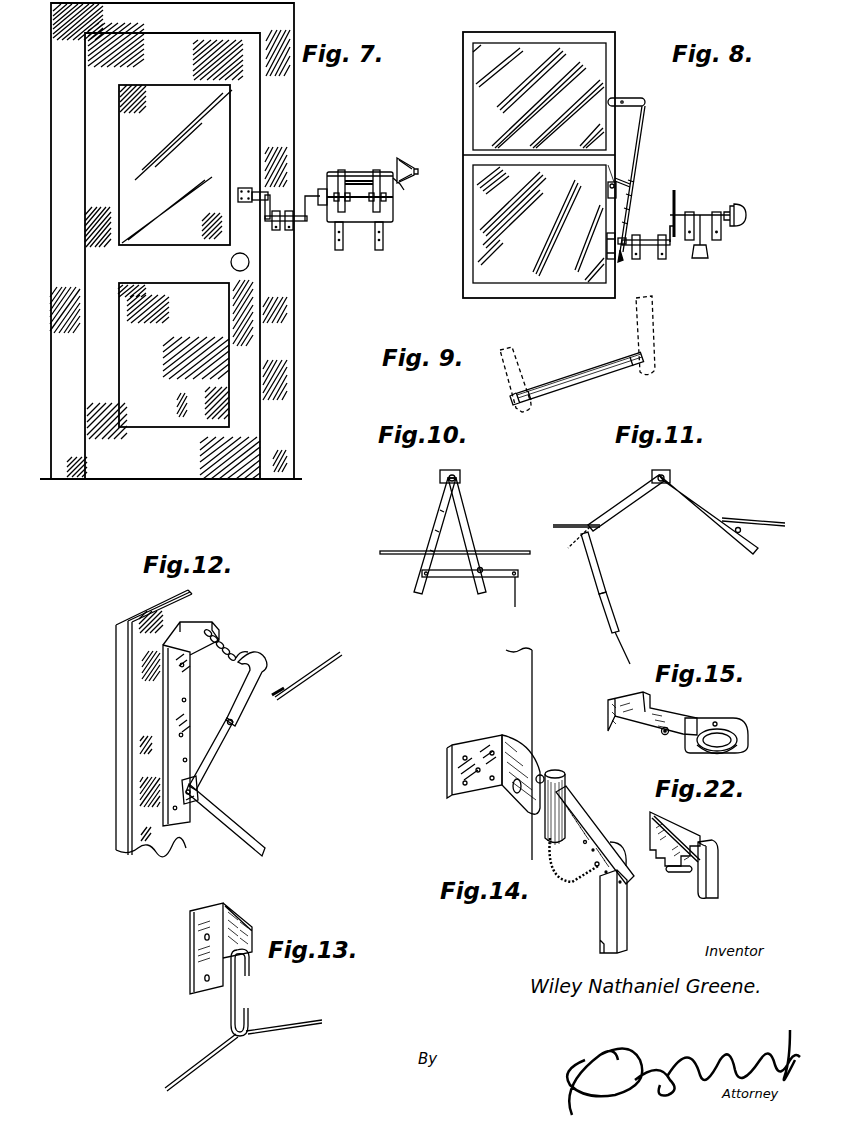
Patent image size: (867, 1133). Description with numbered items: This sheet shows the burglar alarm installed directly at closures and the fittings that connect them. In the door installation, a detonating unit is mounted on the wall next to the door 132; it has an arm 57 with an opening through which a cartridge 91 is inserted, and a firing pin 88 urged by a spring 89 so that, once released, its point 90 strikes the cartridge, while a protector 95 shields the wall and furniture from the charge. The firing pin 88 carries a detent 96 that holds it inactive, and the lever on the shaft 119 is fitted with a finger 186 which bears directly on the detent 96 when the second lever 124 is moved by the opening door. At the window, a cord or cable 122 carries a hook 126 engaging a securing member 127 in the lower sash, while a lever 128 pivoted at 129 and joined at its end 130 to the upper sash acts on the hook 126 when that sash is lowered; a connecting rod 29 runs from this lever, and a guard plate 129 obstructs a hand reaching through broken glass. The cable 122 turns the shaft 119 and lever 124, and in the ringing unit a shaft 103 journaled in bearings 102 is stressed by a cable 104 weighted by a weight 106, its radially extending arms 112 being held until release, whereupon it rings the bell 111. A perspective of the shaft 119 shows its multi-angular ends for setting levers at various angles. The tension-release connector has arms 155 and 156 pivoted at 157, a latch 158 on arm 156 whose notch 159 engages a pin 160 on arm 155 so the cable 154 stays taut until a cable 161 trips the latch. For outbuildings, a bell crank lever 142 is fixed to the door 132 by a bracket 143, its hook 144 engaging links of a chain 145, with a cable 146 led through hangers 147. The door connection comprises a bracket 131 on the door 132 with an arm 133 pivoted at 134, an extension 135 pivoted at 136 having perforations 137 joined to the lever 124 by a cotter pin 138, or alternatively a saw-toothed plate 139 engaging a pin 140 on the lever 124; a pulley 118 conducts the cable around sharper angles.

In FIG. 7, the door 132 is at (250, 338).
In FIG. 12, the door 132 is at (128, 728).
In FIG. 14, the door 132 is at (518, 698).
In FIG. 7, the extension 135 is at (254, 188).
In FIG. 14, the extension 135 is at (586, 824).
In FIG. 7, the second lever 124 is at (271, 200).
In FIG. 8, the second lever 124 is at (626, 238).
In FIG. 14, the second lever 124 is at (610, 928).
In FIG. 22, the second lever 124 is at (708, 890).
In FIG. 7, the shaft 119 is at (283, 230).
In FIG. 8, the shaft 119 is at (644, 240).
In FIG. 9, the shaft 119 is at (585, 366).
In FIG. 7, the finger 186 is at (307, 196).
In FIG. 7, the detent 96 is at (321, 205).
In FIG. 7, the arm 57 is at (330, 222).
In FIG. 7, the spring 89 is at (342, 170).
In FIG. 7, the firing pin 88 is at (376, 170).
In FIG. 7, the point 90 is at (393, 197).
In FIG. 7, the cartridge 91 is at (408, 186).
In FIG. 7, the protector 95 is at (404, 162).
In FIG. 8, the end 130 is at (610, 100).
In FIG. 8, the lever 128 is at (640, 98).
In FIG. 8, the rod 29 is at (638, 110).
In FIG. 8, the hook 126 is at (627, 183).
In FIG. 8, the cord or cable 122 is at (628, 192).
In FIG. 8, the securing member 127 is at (608, 186).
In FIG. 8, the pivot / guard plate 129 is at (607, 245).
In FIG. 8, the radially extending arms 112 is at (670, 208).
In FIG. 8, the shaft 103 is at (693, 212).
In FIG. 8, the bearings 102 is at (688, 212).
In FIG. 8, the bell 111 is at (746, 213).
In FIG. 8, the cord or cable 104 is at (702, 236).
In FIG. 8, the weight 106 is at (700, 258).
In FIG. 10, the pivot 157 is at (460, 476).
In FIG. 11, the pivot 157 is at (670, 474).
In FIG. 10, the arm 156 is at (436, 518).
In FIG. 11, the arm 156 is at (624, 504).
In FIG. 10, the arm 155 is at (474, 516).
In FIG. 11, the arm 155 is at (704, 500).
In FIG. 10, the cable 154 is at (398, 551).
In FIG. 11, the cable 154 is at (573, 525).
In FIG. 10, the latch 158 is at (468, 577).
In FIG. 11, the latch 158 is at (600, 550).
In FIG. 10, the pin 160 is at (484, 569).
In FIG. 11, the pin 160 is at (742, 532).
In FIG. 10, the cable 161 is at (516, 594).
In FIG. 11, the cable 161 is at (624, 640).
In FIG. 11, the notch 159 is at (614, 585).
In FIG. 12, the bracket 143 is at (188, 678).
In FIG. 12, the chain 145 is at (228, 646).
In FIG. 12, the hook 144 is at (258, 650).
In FIG. 12, the cable 146 is at (316, 672).
In FIG. 13, the cable 146 is at (296, 1024).
In FIG. 12, the bell crank lever 142 is at (215, 750).
In FIG. 13, the hanger 147 is at (229, 1010).
In FIG. 14, the bracket 131 is at (470, 750).
In FIG. 14, the pivot 134 is at (512, 796).
In FIG. 14, the arm 133 is at (543, 775).
In FIG. 14, the pivot 136 is at (566, 780).
In FIG. 14, the perforations 137 is at (598, 858).
In FIG. 14, the cotter pin 138 is at (595, 878).
In FIG. 15, the pulley 118 is at (744, 741).
In FIG. 22, the plate 139 is at (680, 842).
In FIG. 22, the pin 140 is at (678, 874).